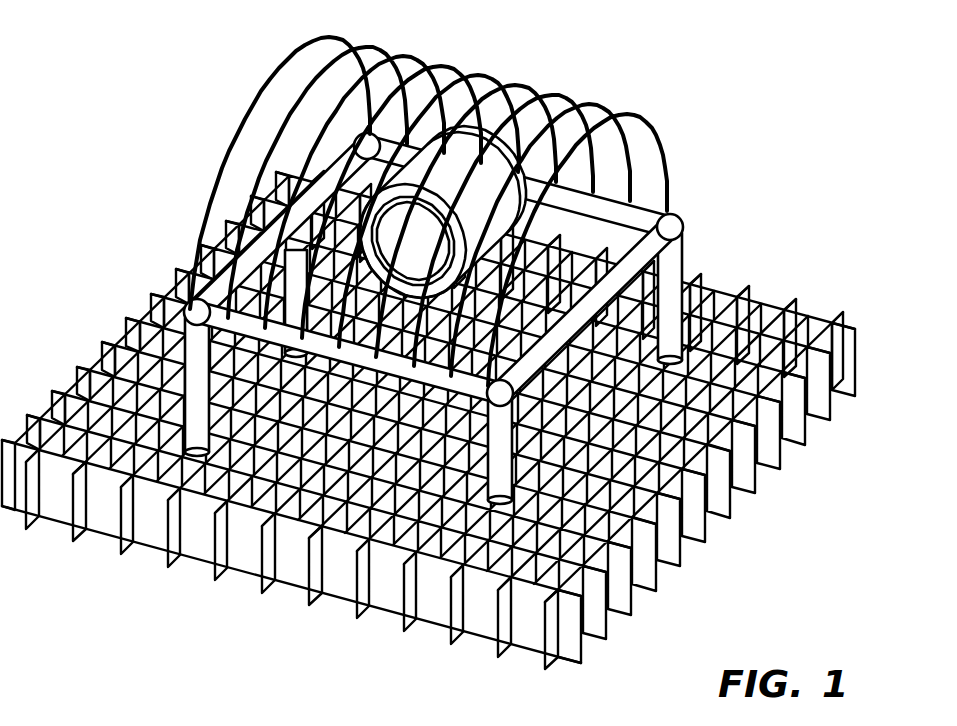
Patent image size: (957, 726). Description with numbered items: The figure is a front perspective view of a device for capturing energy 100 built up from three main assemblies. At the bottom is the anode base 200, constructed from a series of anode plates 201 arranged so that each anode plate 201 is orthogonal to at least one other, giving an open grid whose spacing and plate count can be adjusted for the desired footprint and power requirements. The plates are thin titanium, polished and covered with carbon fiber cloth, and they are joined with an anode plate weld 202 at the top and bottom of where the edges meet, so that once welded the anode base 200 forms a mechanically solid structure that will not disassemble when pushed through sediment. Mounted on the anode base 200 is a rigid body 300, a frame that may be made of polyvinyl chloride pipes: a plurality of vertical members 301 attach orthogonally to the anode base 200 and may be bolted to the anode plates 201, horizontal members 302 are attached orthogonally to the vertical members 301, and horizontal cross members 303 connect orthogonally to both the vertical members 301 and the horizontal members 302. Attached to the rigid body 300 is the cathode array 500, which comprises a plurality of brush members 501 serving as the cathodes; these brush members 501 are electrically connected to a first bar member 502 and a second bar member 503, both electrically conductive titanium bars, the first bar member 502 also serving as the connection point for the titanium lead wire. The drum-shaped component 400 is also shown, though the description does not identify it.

The device for capturing energy 100 is at (175, 116).
The anode base 200 is at (300, 596).
The anode plate 201 is at (790, 338).
The anode plate weld 202 is at (40, 440).
The rigid body 300 is at (188, 305).
The vertical member 301 is at (510, 468).
The horizontal member 302 is at (690, 360).
The horizontal cross member 303 is at (333, 348).
The drum 400 is at (466, 172).
The cathode array 500 is at (674, 170).
The brush member 501 is at (577, 97).
The first bar member 502 is at (224, 322).
The second bar member 503 is at (642, 213).